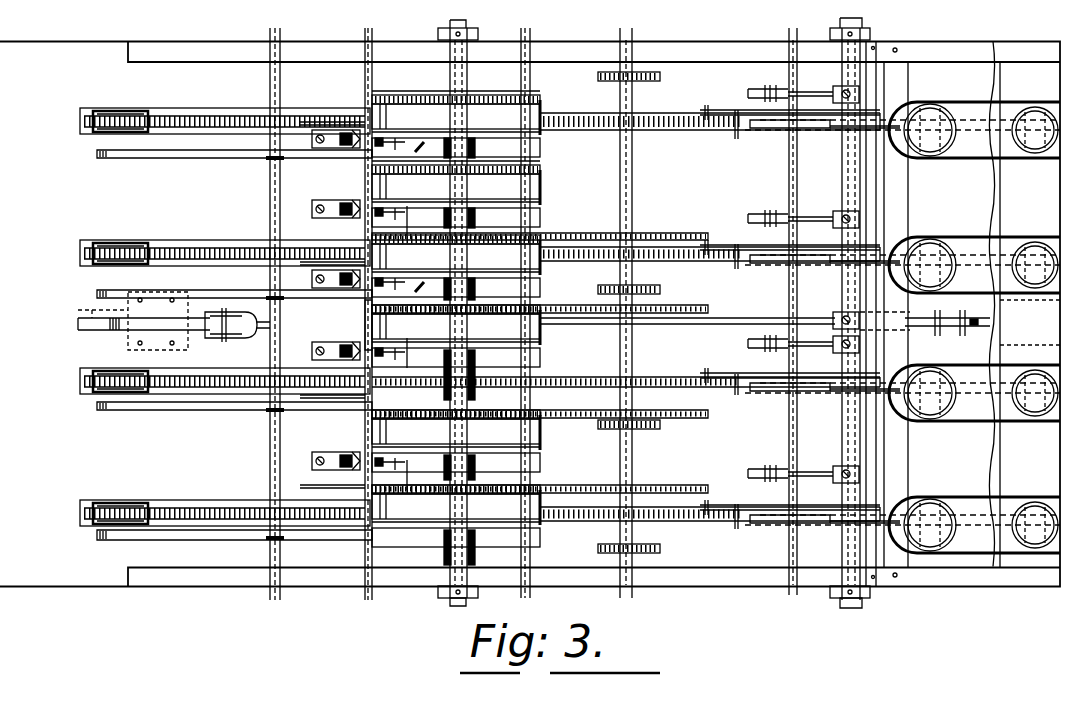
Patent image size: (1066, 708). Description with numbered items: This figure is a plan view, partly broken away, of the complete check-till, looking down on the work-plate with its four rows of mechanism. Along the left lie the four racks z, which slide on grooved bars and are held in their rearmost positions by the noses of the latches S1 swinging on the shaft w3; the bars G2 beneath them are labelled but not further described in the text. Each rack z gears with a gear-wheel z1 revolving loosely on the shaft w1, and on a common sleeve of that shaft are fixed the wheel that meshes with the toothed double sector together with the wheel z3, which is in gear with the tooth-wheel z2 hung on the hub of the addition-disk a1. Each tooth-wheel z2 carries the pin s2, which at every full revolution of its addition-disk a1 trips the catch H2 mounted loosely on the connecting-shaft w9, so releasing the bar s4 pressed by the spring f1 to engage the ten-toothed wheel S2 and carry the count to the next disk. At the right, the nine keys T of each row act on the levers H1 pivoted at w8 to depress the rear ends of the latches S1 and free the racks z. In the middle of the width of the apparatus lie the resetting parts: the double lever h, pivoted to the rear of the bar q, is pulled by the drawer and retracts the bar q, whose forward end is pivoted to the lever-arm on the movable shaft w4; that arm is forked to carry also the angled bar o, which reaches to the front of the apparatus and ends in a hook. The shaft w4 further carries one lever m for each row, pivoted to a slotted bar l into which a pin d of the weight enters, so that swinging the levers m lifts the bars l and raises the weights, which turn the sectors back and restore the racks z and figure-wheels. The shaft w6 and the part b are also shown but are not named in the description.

The rack z is at (165, 114).
The gear-wheel z1 is at (670, 118).
The tooth-wheel z2 is at (488, 96).
The wheel z3 is at (662, 236).
The shaft w1 is at (632, 192).
The shaft w3 is at (797, 190).
The movable shaft w4 is at (842, 188).
The shaft w6 is at (450, 88).
The pivot shaft w8 is at (530, 88).
The connecting-shaft w9 is at (282, 94).
The guide bar G2 is at (162, 155).
The lever H1 is at (768, 132).
The catch H2 is at (332, 306).
The latch S1 is at (825, 132).
The ratchet wheel S2 is at (542, 280).
The addition-disk a1 is at (540, 110).
The spring f1 is at (348, 200).
The pin s2 is at (407, 307).
The bar s4 is at (404, 214).
The bar l is at (752, 90).
The lever m is at (800, 92).
The bar q is at (297, 290).
The pin d is at (150, 328).
The head b is at (196, 325).
The double lever h is at (937, 334).
The bar o is at (1028, 315).
The key T is at (1035, 105).